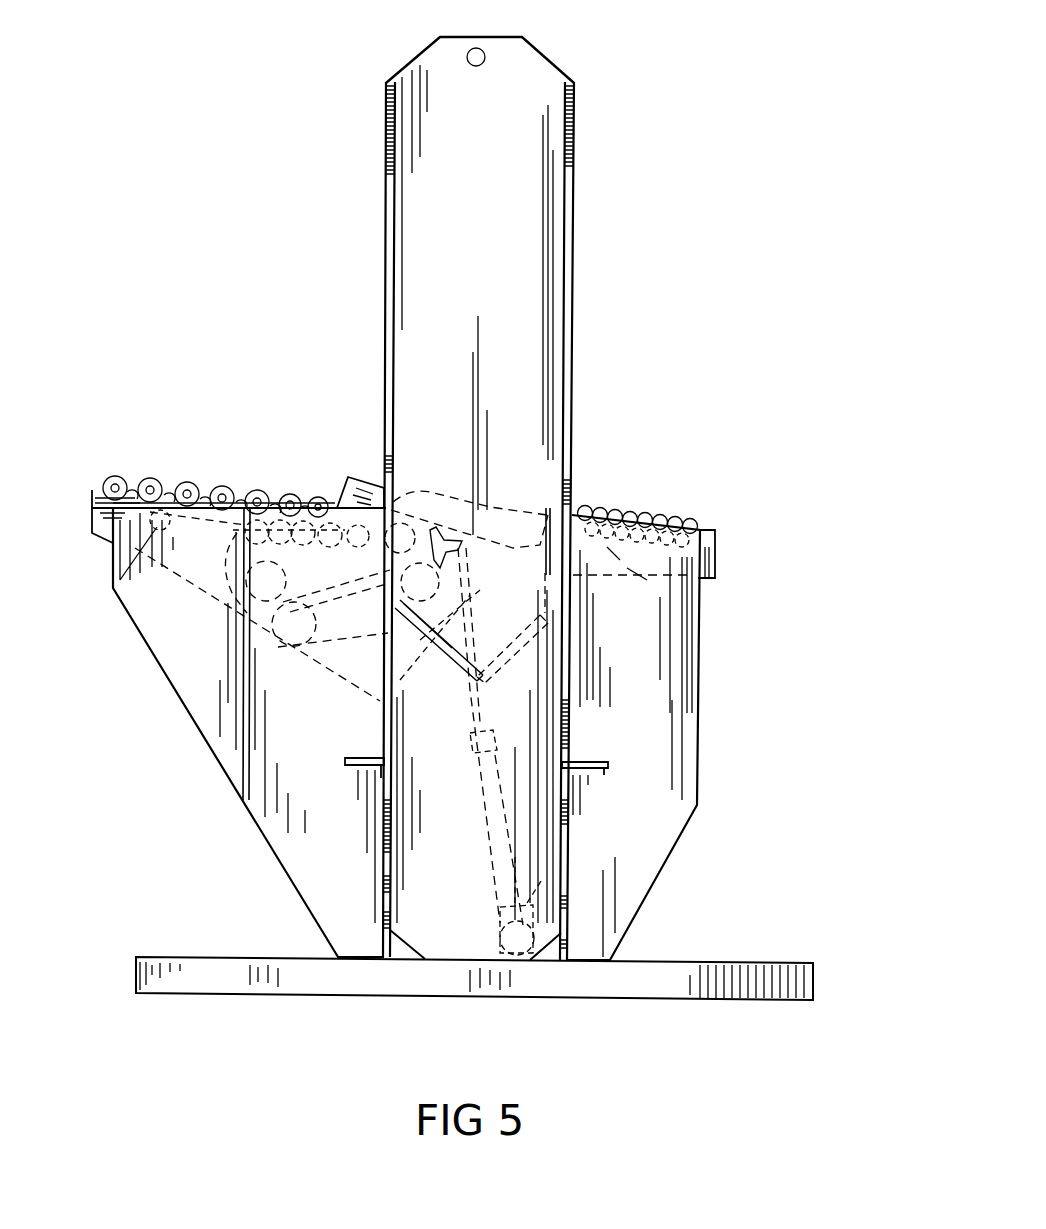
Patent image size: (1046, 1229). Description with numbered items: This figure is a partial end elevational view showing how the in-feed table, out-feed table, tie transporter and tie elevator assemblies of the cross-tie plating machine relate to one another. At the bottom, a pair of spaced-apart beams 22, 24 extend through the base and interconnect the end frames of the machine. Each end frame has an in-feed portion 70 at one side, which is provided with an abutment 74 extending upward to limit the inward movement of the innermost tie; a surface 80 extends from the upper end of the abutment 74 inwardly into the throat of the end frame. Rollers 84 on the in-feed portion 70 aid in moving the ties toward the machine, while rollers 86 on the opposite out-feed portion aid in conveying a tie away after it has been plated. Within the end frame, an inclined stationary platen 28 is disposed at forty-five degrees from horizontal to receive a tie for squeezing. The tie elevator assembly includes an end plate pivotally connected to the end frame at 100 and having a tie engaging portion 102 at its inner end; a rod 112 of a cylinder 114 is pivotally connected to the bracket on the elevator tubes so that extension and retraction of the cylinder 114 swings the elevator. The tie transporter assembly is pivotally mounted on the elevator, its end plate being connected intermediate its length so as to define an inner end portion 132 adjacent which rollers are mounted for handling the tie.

The beam 22 is at (383, 840).
The beam 24 is at (564, 860).
The inclined stationary platen 28 is at (563, 653).
The in-feed portion 70 is at (113, 506).
The abutment 74 is at (335, 495).
The surface 80 is at (367, 480).
The rollers 84 is at (104, 482).
The rollers 86 is at (587, 513).
The pivotal connection 100 is at (113, 572).
The tie engaging portion 102 is at (563, 485).
The rod 112 is at (445, 658).
The cylinder 114 is at (497, 762).
The inner end portion 132 is at (653, 580).